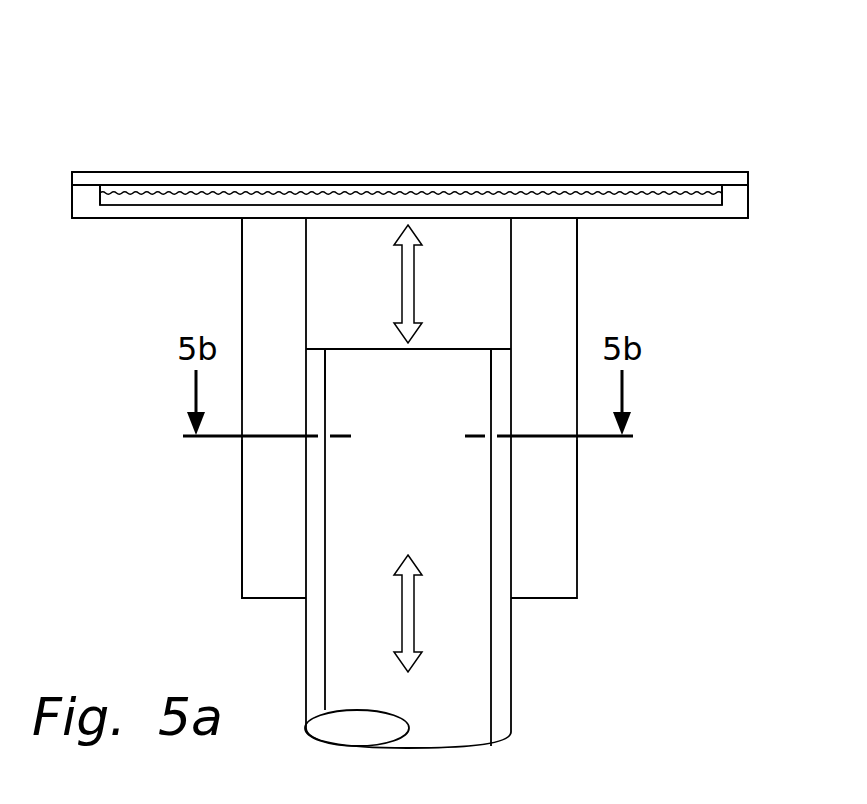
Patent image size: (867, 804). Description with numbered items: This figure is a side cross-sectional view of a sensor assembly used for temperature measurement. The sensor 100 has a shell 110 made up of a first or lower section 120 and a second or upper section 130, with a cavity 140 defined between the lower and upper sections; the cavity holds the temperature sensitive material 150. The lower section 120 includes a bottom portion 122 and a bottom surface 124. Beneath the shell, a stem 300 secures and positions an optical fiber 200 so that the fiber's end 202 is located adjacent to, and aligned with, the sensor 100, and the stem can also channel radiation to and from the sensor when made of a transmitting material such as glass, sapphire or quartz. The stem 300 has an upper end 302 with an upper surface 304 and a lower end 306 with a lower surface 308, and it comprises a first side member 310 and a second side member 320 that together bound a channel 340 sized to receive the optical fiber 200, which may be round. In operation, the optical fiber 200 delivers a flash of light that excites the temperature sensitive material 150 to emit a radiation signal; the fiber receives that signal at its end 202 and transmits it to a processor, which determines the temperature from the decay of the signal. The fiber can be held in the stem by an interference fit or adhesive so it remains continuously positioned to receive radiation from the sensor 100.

The sensor 100 is at (130, 142).
The shell 110 is at (199, 160).
The lower section 120 is at (702, 213).
The bottom portion 122 is at (135, 211).
The bottom surface 124 is at (200, 218).
The upper section 130 is at (371, 179).
The cavity 140 is at (549, 189).
The temperature sensitive material 150 is at (626, 198).
The optical fiber 200 is at (524, 666).
The end 202 is at (345, 348).
The stem 300 is at (592, 534).
The upper end 302 is at (268, 235).
The upper surface 304 is at (540, 222).
The lower end 306 is at (257, 563).
The lower surface 308 is at (262, 600).
The first side member 310 is at (257, 483).
The second side member 320 is at (560, 485).
The channel 340 is at (470, 248).